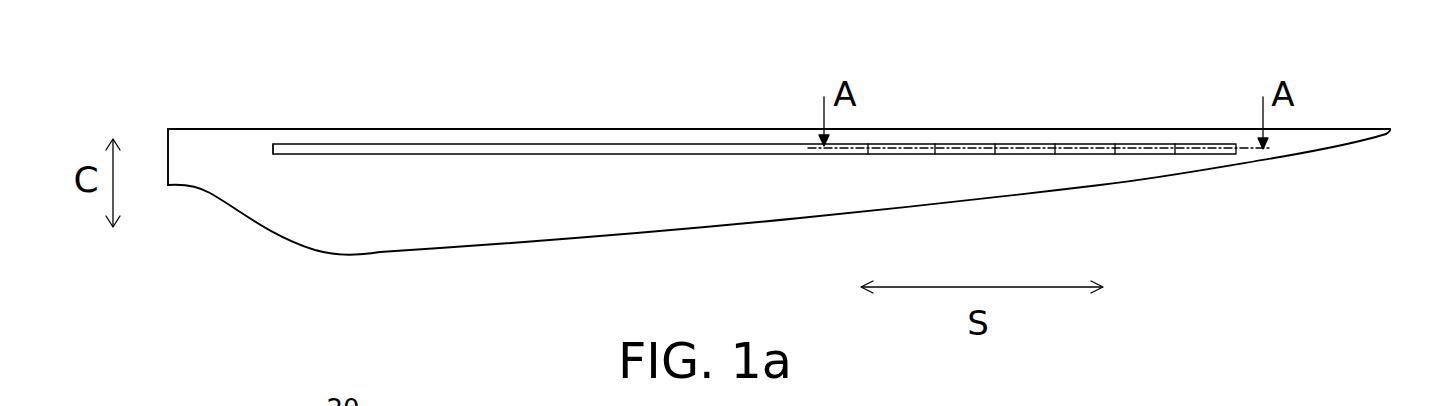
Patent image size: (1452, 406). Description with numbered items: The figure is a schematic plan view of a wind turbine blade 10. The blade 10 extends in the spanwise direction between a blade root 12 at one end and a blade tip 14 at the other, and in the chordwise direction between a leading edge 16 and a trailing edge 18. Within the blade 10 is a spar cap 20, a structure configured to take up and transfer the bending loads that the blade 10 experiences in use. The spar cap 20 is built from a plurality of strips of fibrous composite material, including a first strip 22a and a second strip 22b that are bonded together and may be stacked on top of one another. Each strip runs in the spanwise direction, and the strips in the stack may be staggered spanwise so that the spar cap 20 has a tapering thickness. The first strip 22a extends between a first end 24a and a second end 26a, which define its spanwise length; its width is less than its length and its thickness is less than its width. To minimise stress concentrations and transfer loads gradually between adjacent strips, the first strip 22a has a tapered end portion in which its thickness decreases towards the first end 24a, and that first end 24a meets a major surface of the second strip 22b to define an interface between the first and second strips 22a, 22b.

The wind turbine blade 10 is at (764, 177).
The blade root 12 is at (167, 147).
The blade tip 14 is at (1392, 130).
The leading edge 16 is at (450, 128).
The trailing edge 18 is at (458, 251).
The spar cap 20 is at (772, 152).
The first strip 22a is at (952, 155).
The second strip 22b is at (1042, 147).
The first end of the first strip 24a is at (991, 138).
The second end of the first strip 26a is at (276, 159).